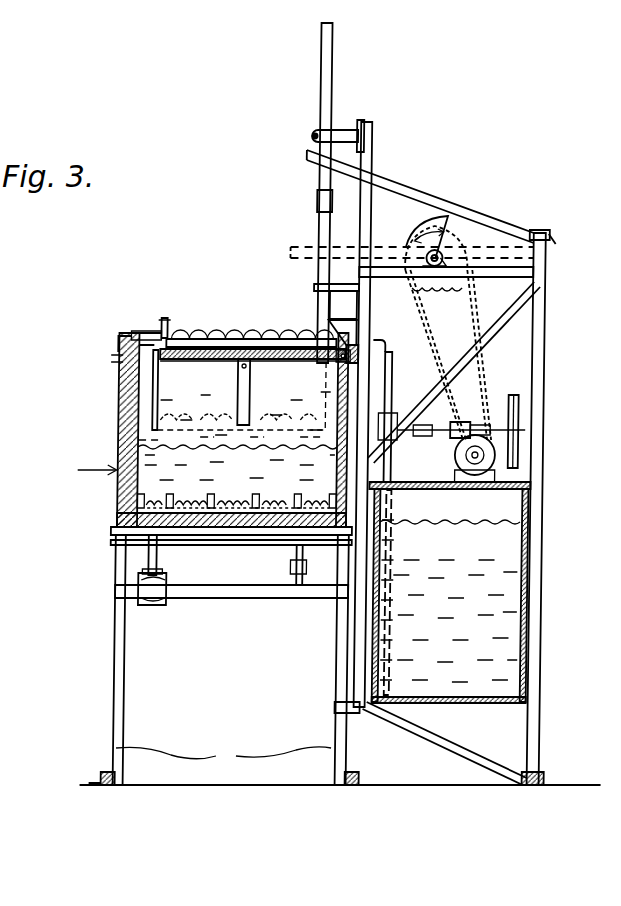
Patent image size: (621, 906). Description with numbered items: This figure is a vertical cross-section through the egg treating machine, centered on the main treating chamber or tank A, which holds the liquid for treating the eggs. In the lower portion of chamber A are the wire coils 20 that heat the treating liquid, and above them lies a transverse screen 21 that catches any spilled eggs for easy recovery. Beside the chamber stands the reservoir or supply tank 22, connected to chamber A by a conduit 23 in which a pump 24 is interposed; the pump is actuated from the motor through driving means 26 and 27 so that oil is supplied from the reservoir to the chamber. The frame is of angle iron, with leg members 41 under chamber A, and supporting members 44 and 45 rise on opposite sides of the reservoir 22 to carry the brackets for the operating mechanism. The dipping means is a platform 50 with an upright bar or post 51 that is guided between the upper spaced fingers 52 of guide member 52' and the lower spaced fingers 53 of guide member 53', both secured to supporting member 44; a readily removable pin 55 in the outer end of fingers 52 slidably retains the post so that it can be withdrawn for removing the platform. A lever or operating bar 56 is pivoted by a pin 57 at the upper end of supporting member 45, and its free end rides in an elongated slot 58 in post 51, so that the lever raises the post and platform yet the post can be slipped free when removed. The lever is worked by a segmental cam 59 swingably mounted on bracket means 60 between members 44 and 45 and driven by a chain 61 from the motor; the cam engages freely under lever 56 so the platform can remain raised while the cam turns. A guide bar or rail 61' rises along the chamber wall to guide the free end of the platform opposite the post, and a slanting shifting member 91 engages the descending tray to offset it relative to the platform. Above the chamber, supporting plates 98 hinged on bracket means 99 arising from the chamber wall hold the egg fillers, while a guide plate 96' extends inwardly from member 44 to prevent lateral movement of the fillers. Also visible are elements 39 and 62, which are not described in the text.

The wire coils 20 is at (240, 508).
The transverse screen 21 is at (240, 449).
The reservoir or supply tank 22 is at (529, 578).
The conduit 23 is at (392, 538).
The pump 24 is at (391, 410).
The driving means 26 is at (450, 428).
The driving means 27 is at (512, 398).
The liquid level 39 is at (492, 522).
The leg members 41 is at (223, 755).
The supporting member 44 is at (368, 165).
The supporting member 45 is at (543, 435).
The platform 50 is at (183, 362).
The upright bar or post 51 is at (322, 80).
The upper spaced fingers 52 is at (313, 124).
The guide member 52' is at (358, 120).
The lower spaced fingers 53 is at (313, 300).
The guide member 53' is at (317, 333).
The removable pin 55 is at (308, 137).
The lever or operating bar 56 is at (470, 212).
The pin 57 is at (548, 240).
The elongated slot 58 is at (314, 198).
The segmental cam 59 is at (412, 232).
The bracket means 60 is at (448, 262).
The chain 61 is at (448, 333).
The guide bar or rail 61' is at (239, 390).
The work rack 62 is at (300, 341).
The shifting member 91 is at (249, 397).
The guide plate 96' is at (303, 270).
The supporting members or plates 98 is at (167, 326).
The bracket means 99 is at (117, 338).
The main treating chamber or tank A is at (86, 471).